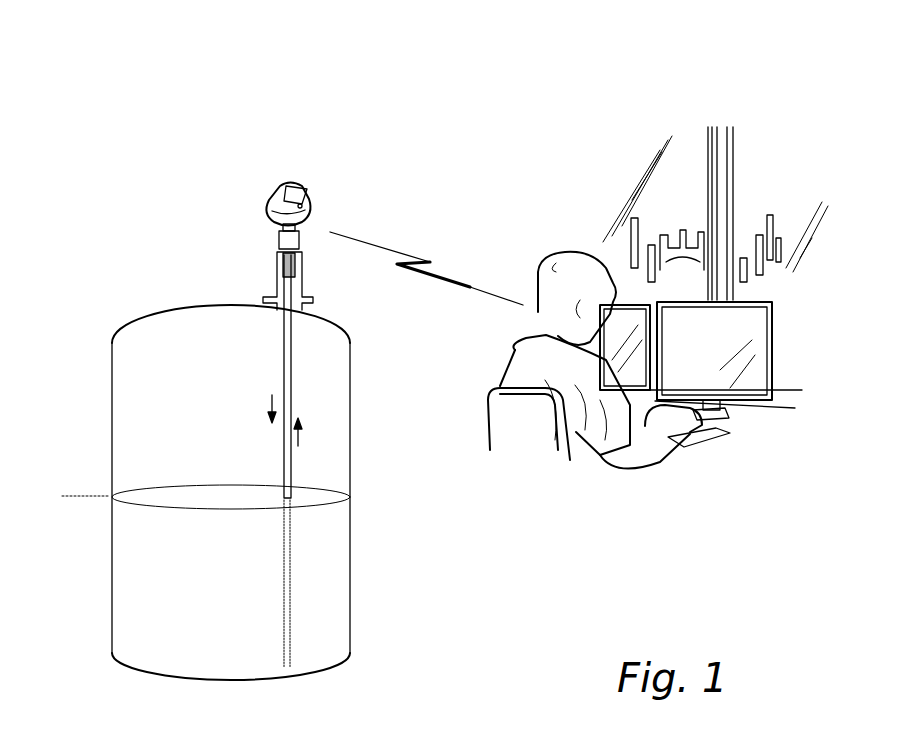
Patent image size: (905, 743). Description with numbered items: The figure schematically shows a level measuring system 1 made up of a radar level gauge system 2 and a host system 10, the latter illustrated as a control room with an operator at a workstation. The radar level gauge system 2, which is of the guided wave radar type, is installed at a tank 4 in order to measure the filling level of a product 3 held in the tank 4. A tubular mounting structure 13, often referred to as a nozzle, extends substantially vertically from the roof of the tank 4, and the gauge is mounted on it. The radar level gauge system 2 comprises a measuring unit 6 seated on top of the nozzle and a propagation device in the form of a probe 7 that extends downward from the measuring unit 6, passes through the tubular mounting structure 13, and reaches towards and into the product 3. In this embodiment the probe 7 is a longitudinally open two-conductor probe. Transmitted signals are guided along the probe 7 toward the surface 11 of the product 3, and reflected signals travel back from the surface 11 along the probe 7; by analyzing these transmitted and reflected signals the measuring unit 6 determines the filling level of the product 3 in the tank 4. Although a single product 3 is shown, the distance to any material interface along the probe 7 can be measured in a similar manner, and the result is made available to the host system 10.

The level measuring system 1 is at (505, 73).
The radar level gauge system 2 is at (245, 154).
The product 3 is at (208, 600).
The tank 4 is at (112, 436).
The measuring unit 6 is at (284, 187).
The probe 7 is at (283, 323).
The host system 10 is at (760, 180).
The surface 11 is at (196, 497).
The tubular mounting structure 13 is at (305, 309).